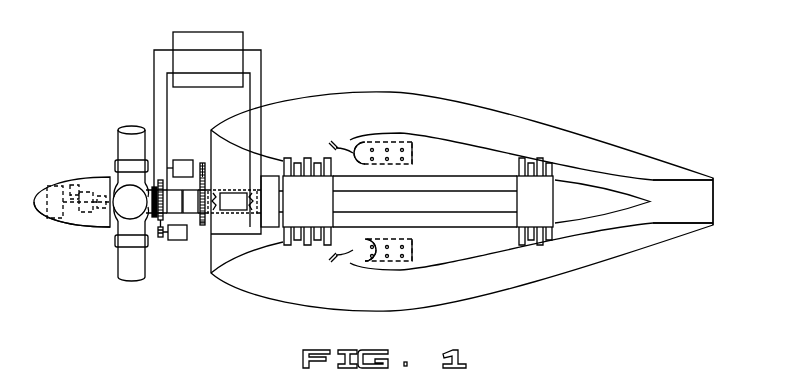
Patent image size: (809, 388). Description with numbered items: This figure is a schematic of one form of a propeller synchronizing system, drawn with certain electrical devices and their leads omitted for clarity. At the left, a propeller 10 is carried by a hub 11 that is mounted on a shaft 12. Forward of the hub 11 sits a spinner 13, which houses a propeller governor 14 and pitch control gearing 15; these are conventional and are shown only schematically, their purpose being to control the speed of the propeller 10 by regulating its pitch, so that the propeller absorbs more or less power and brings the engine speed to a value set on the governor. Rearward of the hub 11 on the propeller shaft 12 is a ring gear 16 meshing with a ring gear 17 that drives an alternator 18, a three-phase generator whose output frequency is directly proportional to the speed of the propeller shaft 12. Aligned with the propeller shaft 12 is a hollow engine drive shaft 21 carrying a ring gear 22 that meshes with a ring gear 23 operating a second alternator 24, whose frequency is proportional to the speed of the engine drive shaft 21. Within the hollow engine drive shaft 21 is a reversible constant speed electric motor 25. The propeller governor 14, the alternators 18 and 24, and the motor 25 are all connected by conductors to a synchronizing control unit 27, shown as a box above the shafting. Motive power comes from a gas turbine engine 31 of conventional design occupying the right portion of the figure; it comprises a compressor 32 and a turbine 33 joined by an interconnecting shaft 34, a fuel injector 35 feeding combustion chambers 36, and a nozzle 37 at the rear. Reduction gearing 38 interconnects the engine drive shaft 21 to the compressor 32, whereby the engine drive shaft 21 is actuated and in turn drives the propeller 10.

The propeller 10 is at (112, 261).
The hub 11 is at (149, 219).
The shaft 12 is at (170, 201).
The spinner 13 is at (79, 178).
The propeller governor 14 is at (52, 214).
The pitch control gearing 15 is at (82, 226).
The ring gear 16 is at (160, 179).
The ring gear 17 is at (160, 239).
The alternator 18 is at (186, 240).
The engine drive shaft 21 is at (195, 201).
The ring gear 22 is at (206, 222).
The ring gear 23 is at (201, 163).
The alternator 24 is at (177, 167).
The reversible constant speed electric motor 25 is at (228, 192).
The synchronizing control unit 27 is at (219, 68).
The gas turbine engine 31 is at (408, 88).
The compressor 32 is at (312, 159).
The turbine 33 is at (546, 157).
The shaft 34 is at (444, 211).
The fuel injector 35 is at (334, 142).
The combustion chambers 36 is at (446, 168).
The nozzle 37 is at (694, 213).
The reduction gearing 38 is at (270, 228).